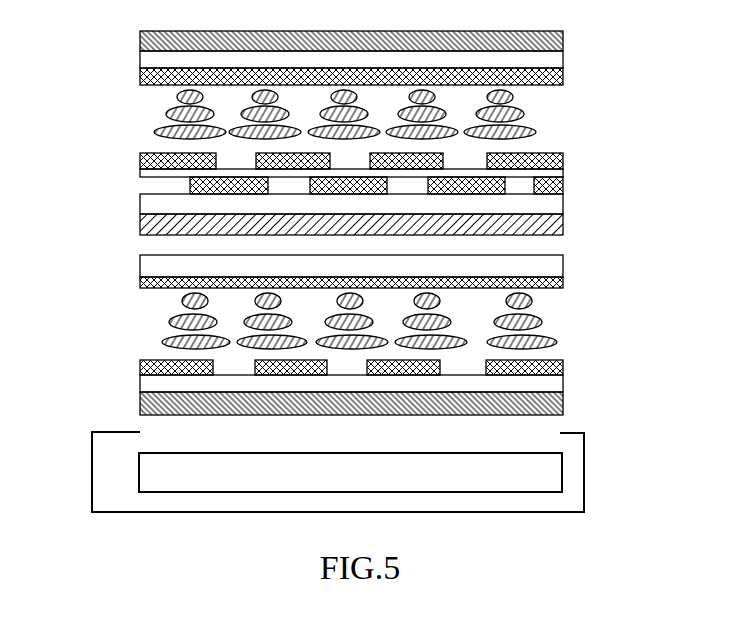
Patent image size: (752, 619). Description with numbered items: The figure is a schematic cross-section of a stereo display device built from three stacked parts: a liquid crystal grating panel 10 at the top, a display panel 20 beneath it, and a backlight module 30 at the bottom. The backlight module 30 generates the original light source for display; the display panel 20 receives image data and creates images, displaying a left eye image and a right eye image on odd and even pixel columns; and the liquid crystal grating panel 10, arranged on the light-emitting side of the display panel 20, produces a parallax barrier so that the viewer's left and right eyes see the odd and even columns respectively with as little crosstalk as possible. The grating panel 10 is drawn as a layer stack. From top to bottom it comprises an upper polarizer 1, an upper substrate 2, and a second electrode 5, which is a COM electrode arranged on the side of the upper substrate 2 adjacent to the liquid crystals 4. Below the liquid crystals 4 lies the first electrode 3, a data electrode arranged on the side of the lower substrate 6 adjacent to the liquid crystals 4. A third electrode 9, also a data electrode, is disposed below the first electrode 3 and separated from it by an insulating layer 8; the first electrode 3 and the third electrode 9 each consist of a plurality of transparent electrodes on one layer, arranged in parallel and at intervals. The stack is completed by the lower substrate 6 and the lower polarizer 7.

The upper polarizer 1 is at (141, 34).
The upper substrate 2 is at (150, 57).
The first electrode 3 is at (145, 160).
The liquid crystal 4 is at (170, 115).
The second electrode 5 is at (143, 75).
The lower substrate 6 is at (150, 203).
The lower polarizer 7 is at (148, 227).
The insulating layer 8 is at (143, 175).
The third electrode 9 is at (190, 183).
The liquid crystal grating panel 10 is at (354, 125).
The display panel 20 is at (609, 255).
The backlight module 30 is at (609, 512).